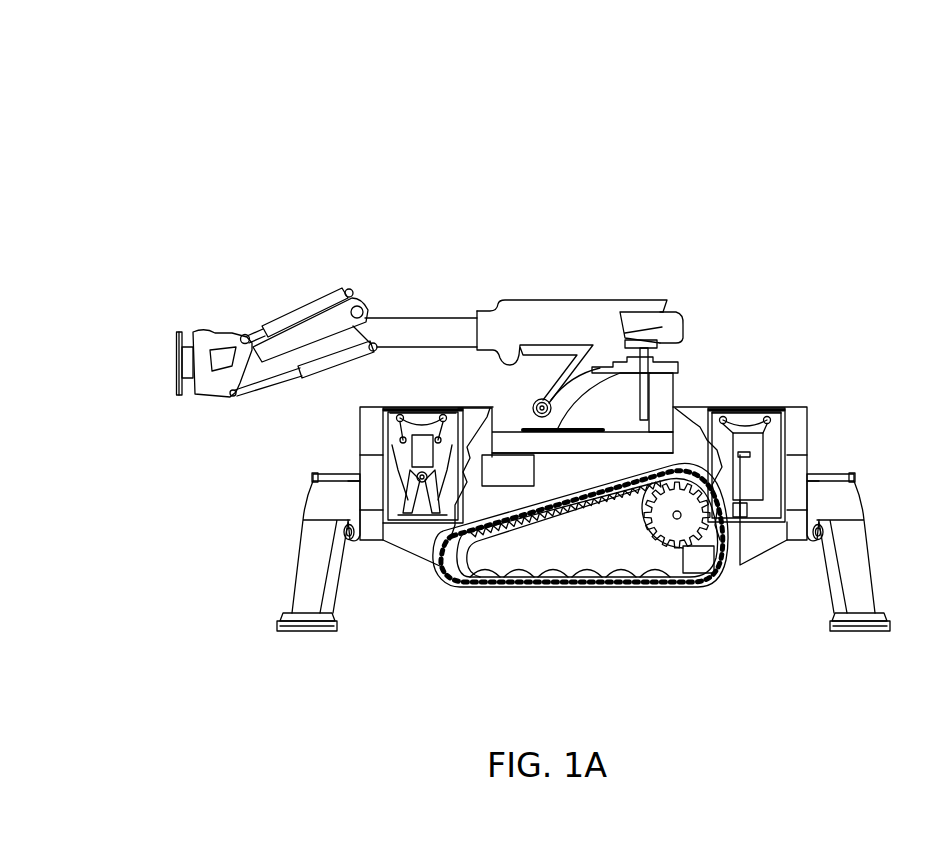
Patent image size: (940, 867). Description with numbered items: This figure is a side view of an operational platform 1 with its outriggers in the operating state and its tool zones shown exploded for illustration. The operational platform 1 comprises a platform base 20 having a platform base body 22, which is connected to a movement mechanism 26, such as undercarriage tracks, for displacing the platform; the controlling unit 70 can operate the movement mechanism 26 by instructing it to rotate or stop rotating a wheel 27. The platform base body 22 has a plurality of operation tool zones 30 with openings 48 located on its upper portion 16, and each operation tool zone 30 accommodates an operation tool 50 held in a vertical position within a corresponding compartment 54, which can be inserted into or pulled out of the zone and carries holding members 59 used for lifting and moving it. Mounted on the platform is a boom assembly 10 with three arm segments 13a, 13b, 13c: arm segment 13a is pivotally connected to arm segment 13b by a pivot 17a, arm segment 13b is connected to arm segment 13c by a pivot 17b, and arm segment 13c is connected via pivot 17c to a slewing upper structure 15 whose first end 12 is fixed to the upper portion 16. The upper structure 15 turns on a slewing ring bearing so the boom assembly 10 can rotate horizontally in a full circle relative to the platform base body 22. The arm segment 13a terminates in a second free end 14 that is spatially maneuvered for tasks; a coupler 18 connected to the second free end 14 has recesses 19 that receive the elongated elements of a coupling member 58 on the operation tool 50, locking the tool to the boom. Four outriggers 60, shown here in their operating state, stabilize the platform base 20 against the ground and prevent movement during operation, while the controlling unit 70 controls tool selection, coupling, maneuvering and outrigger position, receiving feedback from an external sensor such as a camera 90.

The operational platform 1 is at (455, 200).
The boom assembly 10 is at (615, 280).
The first end 12 is at (603, 413).
The arm segment 13a is at (313, 328).
The arm segment 13b is at (503, 327).
The arm segment 13c is at (585, 382).
The second free end 14 is at (200, 352).
The slewing upper structure 15 is at (657, 397).
The upper portion 16 is at (487, 405).
The pivot 17a is at (361, 309).
The pivot 17b is at (608, 352).
The pivot 17c is at (544, 398).
The coupler 18 is at (176, 366).
The recesses 19 is at (183, 325).
The platform base 20 is at (830, 410).
The platform base body 22 is at (615, 467).
The movement mechanism 26 is at (545, 588).
The wheel 27 is at (682, 527).
The operation tool zones 30 is at (378, 427).
The openings 48 is at (405, 407).
The operation tool 50 is at (403, 452).
The compartment 54 is at (393, 498).
The coupling member 58 is at (418, 430).
The holding members 59 is at (457, 407).
The outriggers 60 is at (307, 580).
The controlling unit 70 is at (497, 475).
The camera 90 is at (660, 327).